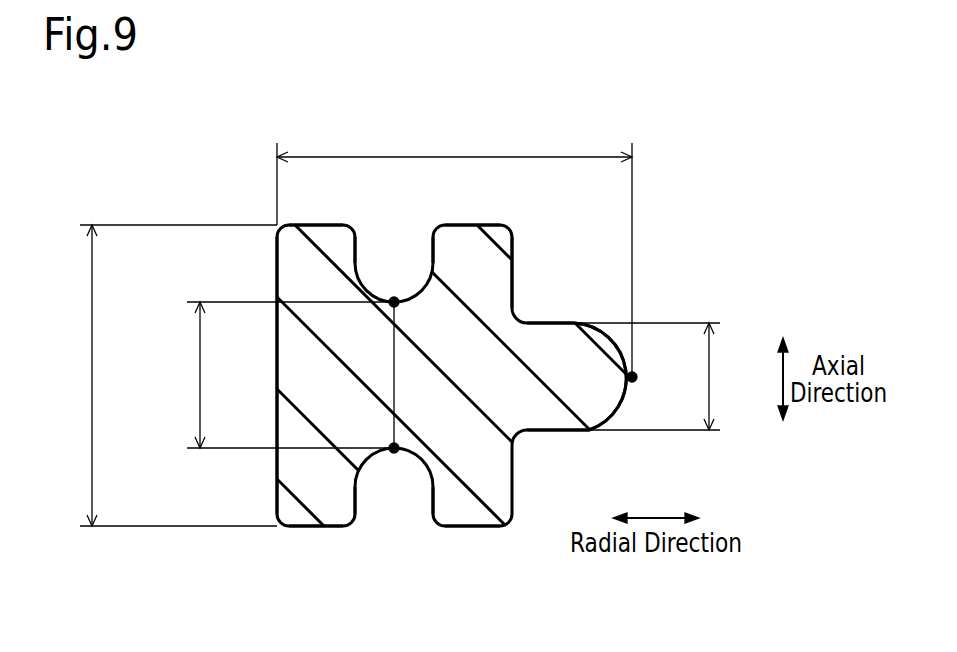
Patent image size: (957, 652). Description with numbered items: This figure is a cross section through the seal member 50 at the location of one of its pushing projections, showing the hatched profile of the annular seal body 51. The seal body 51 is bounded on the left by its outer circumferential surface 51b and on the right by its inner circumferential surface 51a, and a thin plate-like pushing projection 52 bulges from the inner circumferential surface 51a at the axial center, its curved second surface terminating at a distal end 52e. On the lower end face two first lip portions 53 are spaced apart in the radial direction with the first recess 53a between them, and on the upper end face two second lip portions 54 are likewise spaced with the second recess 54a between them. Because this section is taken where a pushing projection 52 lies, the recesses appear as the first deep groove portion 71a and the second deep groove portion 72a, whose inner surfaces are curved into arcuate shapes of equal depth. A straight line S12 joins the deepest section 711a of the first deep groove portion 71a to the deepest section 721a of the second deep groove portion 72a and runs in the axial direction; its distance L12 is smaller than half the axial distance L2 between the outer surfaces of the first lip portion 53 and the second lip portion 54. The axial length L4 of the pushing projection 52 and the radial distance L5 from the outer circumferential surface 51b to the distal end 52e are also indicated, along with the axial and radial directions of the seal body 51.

The seal member 50 is at (226, 200).
The seal body 51 is at (277, 422).
The inner circumferential surface 51a is at (512, 272).
The outer circumferential surface 51b is at (277, 270).
The pushing projection 52 is at (568, 410).
The distal end 52e is at (632, 377).
The first lip portion 53 is at (305, 527).
The first recess 53a is at (362, 472).
The second lip portion 54 is at (318, 225).
The second recess 54a is at (358, 264).
The first deep groove portion 71a is at (428, 472).
The deepest section of first deep groove portion 711a is at (394, 450).
The second deep groove portion 72a is at (433, 270).
The deepest section of second deep groove portion 721a is at (394, 300).
The straight line S12 is at (395, 377).
The distance in axial direction L2 is at (90, 377).
The distance of straight line S12 L12 is at (198, 377).
The length of pushing projection in axial direction L4 is at (712, 377).
The distance in radial direction L5 is at (458, 157).